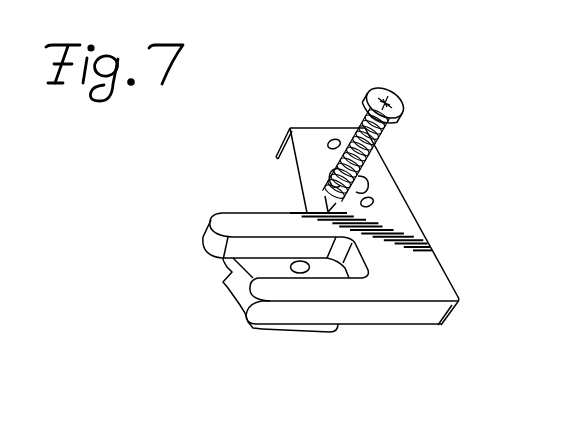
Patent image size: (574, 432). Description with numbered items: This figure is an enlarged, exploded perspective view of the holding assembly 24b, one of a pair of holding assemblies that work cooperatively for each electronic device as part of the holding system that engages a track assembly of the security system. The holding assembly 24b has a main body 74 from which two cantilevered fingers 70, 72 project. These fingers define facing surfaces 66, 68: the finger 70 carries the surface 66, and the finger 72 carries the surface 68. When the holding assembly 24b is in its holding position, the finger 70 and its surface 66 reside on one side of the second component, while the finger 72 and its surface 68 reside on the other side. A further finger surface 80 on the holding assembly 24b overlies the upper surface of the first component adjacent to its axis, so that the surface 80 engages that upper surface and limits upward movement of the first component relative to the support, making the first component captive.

The holding assembly 24b is at (455, 240).
The facing surface 66 is at (280, 250).
The facing surface 68 is at (271, 277).
The cantilevered finger 70 is at (285, 188).
The cantilevered finger 72 is at (325, 290).
The main body 74 is at (393, 208).
The finger surface 80 is at (290, 329).